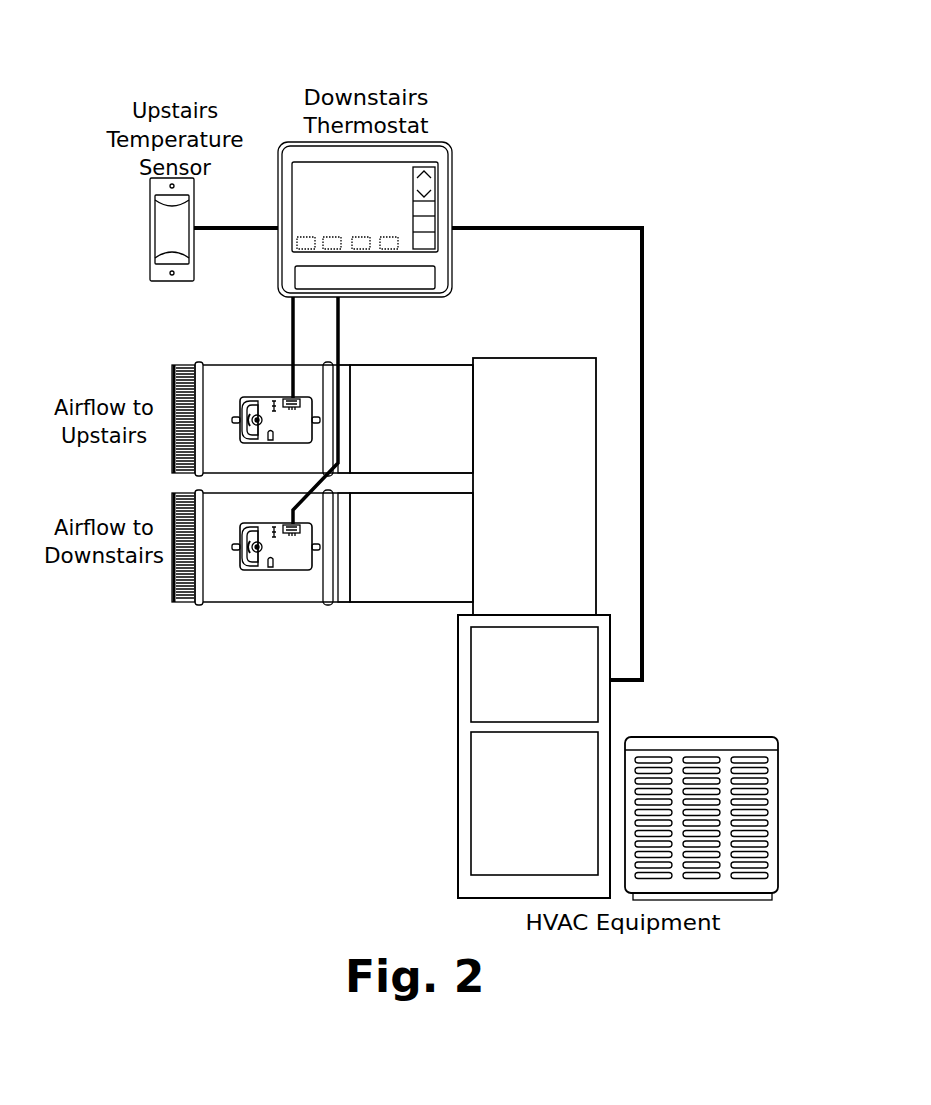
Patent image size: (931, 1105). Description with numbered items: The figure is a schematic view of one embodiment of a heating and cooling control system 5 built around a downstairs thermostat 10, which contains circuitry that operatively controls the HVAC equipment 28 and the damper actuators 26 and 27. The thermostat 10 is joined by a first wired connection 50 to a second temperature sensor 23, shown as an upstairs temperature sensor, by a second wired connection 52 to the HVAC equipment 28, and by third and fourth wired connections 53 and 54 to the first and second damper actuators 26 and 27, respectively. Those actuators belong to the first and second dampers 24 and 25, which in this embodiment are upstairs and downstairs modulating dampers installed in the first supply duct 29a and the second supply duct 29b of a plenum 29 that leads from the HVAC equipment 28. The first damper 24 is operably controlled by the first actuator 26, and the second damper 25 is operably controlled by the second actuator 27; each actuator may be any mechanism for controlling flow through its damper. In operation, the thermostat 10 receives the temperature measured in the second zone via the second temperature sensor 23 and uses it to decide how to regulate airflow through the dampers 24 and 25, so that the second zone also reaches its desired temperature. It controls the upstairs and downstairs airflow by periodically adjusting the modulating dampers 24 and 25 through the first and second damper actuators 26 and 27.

The heating and cooling control system 5 is at (100, 78).
The thermostat 10 is at (297, 150).
The second temperature sensor 23 is at (170, 228).
The first damper 24 is at (212, 380).
The second damper 25 is at (218, 585).
The first damper actuator 26 is at (257, 395).
The second damper actuator 27 is at (285, 560).
The HVAC equipment 28 is at (575, 643).
The plenum 29 is at (541, 385).
The first supply duct 29a is at (451, 378).
The second supply duct 29b is at (402, 588).
The first wired connection 50 is at (240, 225).
The second wired connection 52 is at (648, 287).
The third wired connection 53 is at (290, 315).
The fourth wired connection 54 is at (342, 348).